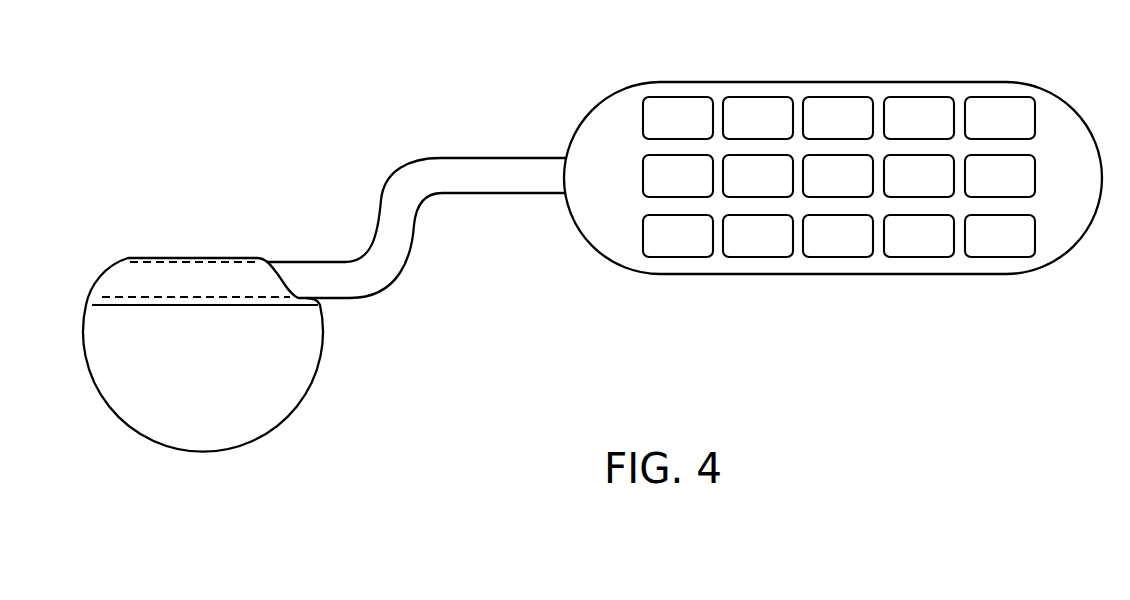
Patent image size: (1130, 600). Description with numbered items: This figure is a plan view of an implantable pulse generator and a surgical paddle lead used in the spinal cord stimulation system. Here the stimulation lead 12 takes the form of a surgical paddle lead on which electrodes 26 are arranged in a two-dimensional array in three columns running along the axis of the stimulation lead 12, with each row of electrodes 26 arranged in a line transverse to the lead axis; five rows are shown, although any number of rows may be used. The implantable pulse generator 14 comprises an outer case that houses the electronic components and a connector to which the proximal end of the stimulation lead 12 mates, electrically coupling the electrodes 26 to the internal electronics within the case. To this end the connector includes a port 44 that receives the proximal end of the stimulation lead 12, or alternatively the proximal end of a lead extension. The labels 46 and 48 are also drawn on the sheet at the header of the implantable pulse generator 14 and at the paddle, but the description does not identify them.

The neurostimulation lead 12 is at (405, 166).
The implantable pulse generator 14 is at (135, 223).
The electrodes 26 is at (834, 97).
The outer case 44 is at (328, 343).
The connector header 46 is at (210, 257).
The lead ends 48 is at (132, 280).